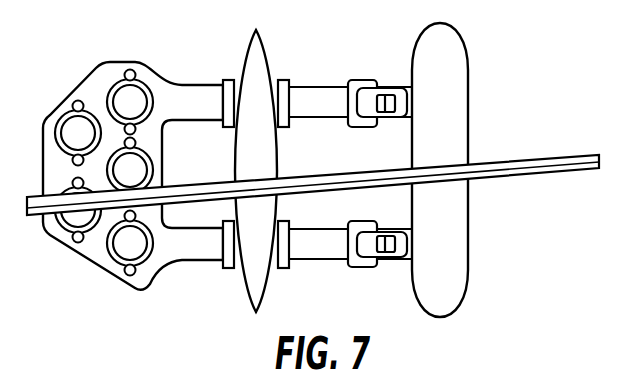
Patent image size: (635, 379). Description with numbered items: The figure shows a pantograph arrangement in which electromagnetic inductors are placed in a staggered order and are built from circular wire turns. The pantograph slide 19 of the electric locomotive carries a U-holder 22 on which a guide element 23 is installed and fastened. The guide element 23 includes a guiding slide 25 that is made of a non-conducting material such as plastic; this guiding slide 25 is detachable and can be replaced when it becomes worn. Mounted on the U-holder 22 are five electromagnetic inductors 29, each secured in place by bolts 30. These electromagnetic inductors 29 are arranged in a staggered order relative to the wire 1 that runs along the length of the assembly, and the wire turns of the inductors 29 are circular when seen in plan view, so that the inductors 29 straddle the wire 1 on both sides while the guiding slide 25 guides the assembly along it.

The wire 1 is at (522, 160).
The pantograph slide 19 is at (452, 43).
The U-holder 22 is at (209, 250).
The guide element 23 is at (281, 266).
The guiding slide 25 is at (265, 53).
The electromagnetic inductors 29 is at (82, 128).
The bolts 30 is at (133, 149).